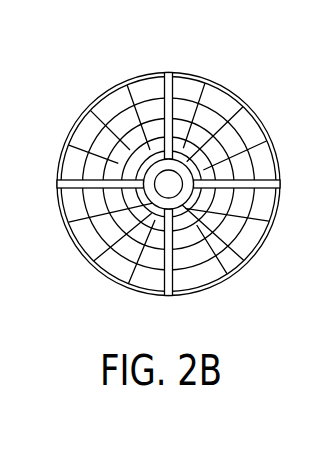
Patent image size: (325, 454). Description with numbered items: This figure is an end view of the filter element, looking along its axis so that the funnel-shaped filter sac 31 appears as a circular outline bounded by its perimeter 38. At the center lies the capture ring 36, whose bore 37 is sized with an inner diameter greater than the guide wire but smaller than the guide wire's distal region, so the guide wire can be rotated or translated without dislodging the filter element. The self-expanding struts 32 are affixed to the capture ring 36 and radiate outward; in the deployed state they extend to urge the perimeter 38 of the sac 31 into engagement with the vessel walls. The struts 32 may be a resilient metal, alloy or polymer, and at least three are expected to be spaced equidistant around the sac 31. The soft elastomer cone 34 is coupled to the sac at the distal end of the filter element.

The filter sac 31 is at (90, 237).
The self-expanding struts 32 is at (164, 88).
The soft elastomer cone 34 is at (153, 208).
The capture ring 36 is at (231, 271).
The bore 37 is at (170, 182).
The perimeter 38 is at (258, 244).